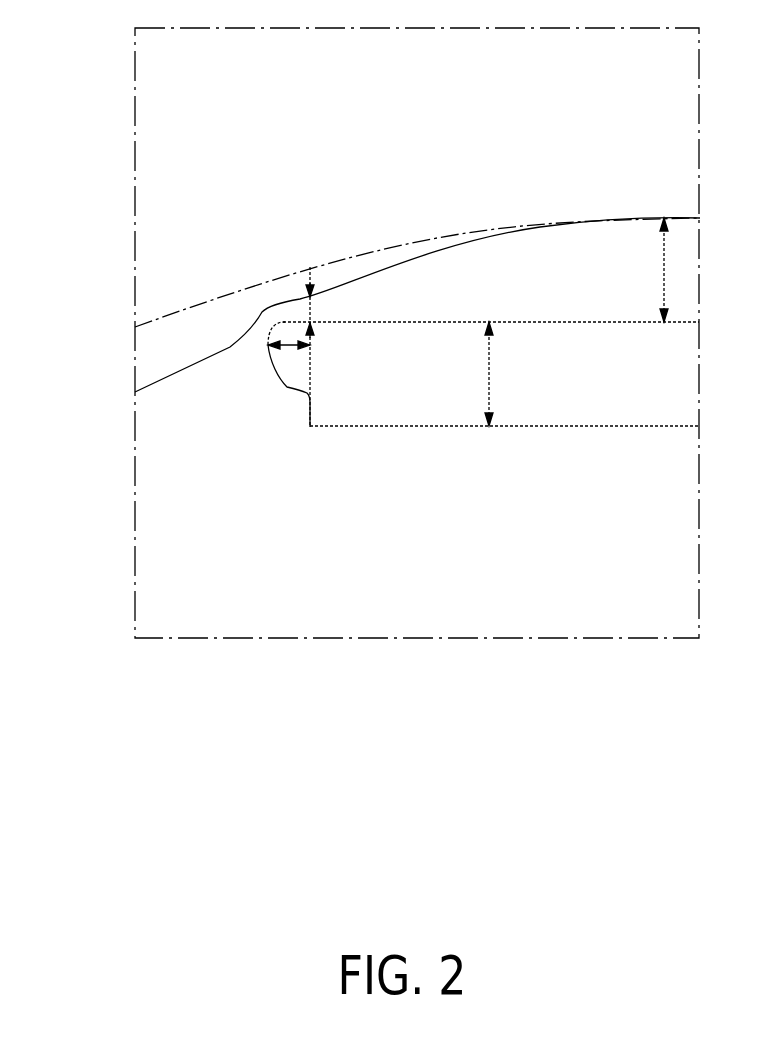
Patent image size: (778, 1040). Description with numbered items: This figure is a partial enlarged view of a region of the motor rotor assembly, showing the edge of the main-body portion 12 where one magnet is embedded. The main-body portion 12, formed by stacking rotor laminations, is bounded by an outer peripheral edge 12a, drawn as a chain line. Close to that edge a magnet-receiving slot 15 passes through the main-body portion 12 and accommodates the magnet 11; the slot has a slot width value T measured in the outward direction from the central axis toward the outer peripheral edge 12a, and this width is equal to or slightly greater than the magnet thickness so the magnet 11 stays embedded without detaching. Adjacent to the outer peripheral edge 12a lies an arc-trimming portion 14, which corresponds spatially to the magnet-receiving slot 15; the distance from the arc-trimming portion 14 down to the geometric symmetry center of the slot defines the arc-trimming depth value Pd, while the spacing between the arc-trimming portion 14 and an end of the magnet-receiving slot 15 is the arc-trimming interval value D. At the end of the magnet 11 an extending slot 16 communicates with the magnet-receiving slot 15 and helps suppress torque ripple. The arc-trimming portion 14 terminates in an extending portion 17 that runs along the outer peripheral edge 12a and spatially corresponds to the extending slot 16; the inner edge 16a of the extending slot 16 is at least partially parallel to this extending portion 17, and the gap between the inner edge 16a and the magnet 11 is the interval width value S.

The magnet 11 is at (383, 390).
The main-body portion 12 is at (223, 544).
The outer peripheral edge 12a is at (160, 318).
The arc-trimming portion 14 is at (443, 248).
The magnet-receiving slot 15 is at (505, 427).
The extending slot 16 is at (295, 308).
The inner edge 16a is at (267, 347).
The extending portion 17 is at (300, 320).
The interval width value S is at (288, 347).
The arc-trimming interval value D is at (313, 310).
The arc-trimming depth value Pd is at (664, 269).
The slot width value T is at (489, 373).